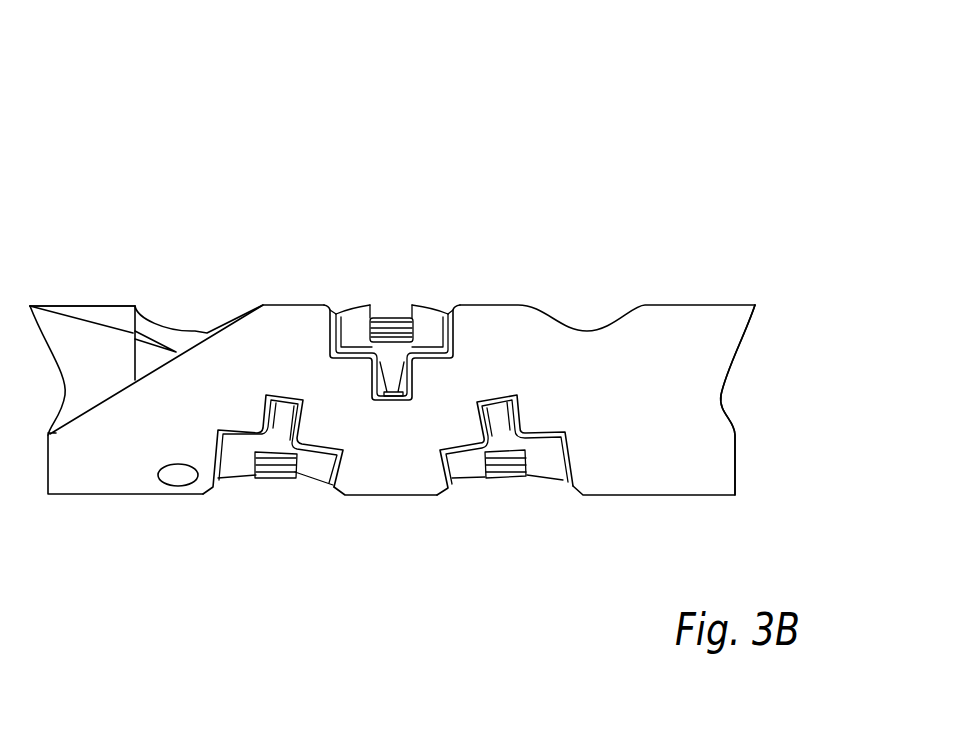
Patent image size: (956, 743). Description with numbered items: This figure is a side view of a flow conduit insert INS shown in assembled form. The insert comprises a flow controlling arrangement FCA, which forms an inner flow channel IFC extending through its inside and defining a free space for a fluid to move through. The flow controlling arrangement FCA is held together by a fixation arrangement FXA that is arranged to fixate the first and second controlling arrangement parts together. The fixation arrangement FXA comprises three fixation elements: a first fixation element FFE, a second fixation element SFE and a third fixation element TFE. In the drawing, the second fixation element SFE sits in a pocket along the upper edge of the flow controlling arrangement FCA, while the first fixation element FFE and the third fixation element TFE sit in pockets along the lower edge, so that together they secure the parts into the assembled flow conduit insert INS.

The flow conduit insert INS is at (426, 322).
The flow controlling arrangement FCA is at (282, 305).
The inner flow channel IFC is at (743, 403).
The fixation arrangement FXA is at (361, 378).
The second fixation element SFE is at (392, 305).
The first fixation element FFE is at (273, 483).
The third fixation element TFE is at (513, 490).